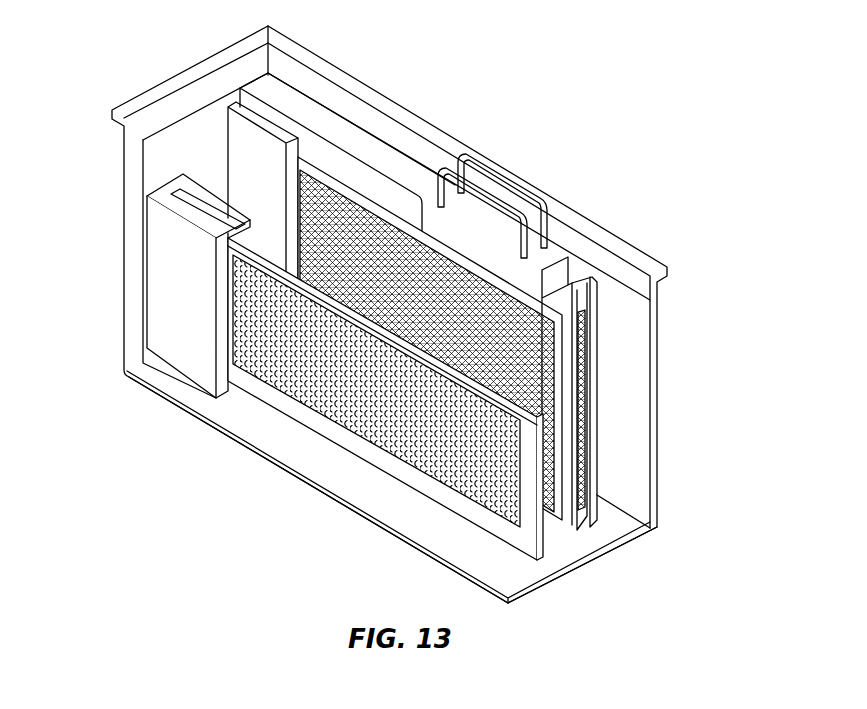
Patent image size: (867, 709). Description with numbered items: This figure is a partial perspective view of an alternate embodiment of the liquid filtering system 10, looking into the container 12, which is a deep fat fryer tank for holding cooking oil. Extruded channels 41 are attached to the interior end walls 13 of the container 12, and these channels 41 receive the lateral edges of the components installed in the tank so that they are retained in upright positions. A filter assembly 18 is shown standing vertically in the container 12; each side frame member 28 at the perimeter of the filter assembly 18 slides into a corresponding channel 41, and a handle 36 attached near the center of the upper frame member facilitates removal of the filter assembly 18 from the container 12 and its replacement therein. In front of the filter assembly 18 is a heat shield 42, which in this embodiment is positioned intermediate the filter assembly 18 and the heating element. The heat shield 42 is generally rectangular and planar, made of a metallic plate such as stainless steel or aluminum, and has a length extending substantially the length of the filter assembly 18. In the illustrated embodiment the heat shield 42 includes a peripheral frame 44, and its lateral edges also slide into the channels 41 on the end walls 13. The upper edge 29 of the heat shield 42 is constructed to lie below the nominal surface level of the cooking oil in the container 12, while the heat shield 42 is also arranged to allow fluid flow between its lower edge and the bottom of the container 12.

The liquid filtering system 10 is at (664, 96).
The container 12 is at (219, 56).
The interior end wall 13 is at (148, 173).
The filter assembly 18 is at (597, 420).
The side frame member 28 is at (543, 547).
The upper edge 29 is at (273, 241).
The handle 36 is at (512, 190).
The channel 41 is at (273, 100).
The heat shield 42 is at (372, 416).
The peripheral frame 44 is at (490, 535).